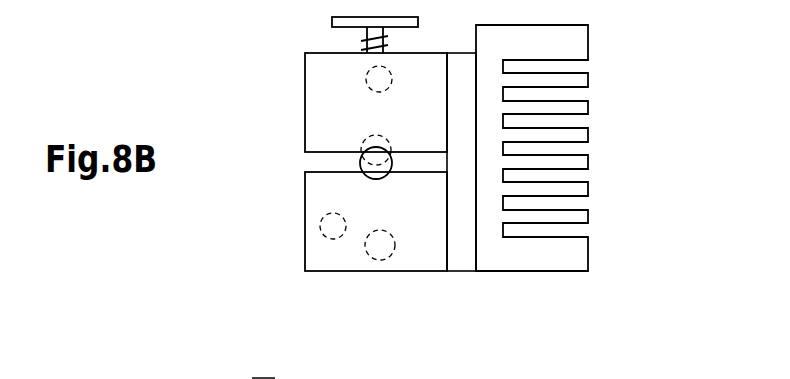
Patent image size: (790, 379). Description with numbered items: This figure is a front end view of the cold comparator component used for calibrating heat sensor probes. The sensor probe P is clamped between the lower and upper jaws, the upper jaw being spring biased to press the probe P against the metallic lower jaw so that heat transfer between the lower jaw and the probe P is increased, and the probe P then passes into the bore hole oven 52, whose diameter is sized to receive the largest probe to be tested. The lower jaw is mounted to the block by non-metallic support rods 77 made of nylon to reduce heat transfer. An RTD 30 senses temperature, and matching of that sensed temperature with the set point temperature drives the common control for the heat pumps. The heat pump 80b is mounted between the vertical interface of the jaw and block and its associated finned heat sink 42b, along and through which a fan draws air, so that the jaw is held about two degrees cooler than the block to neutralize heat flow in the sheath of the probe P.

The support rods 77 is at (370, 93).
The bore hole oven 52 is at (362, 137).
The sensor probe P is at (327, 162).
The RTD 30 is at (334, 214).
The heat pump 80b is at (461, 255).
The heat sink 42b is at (577, 262).